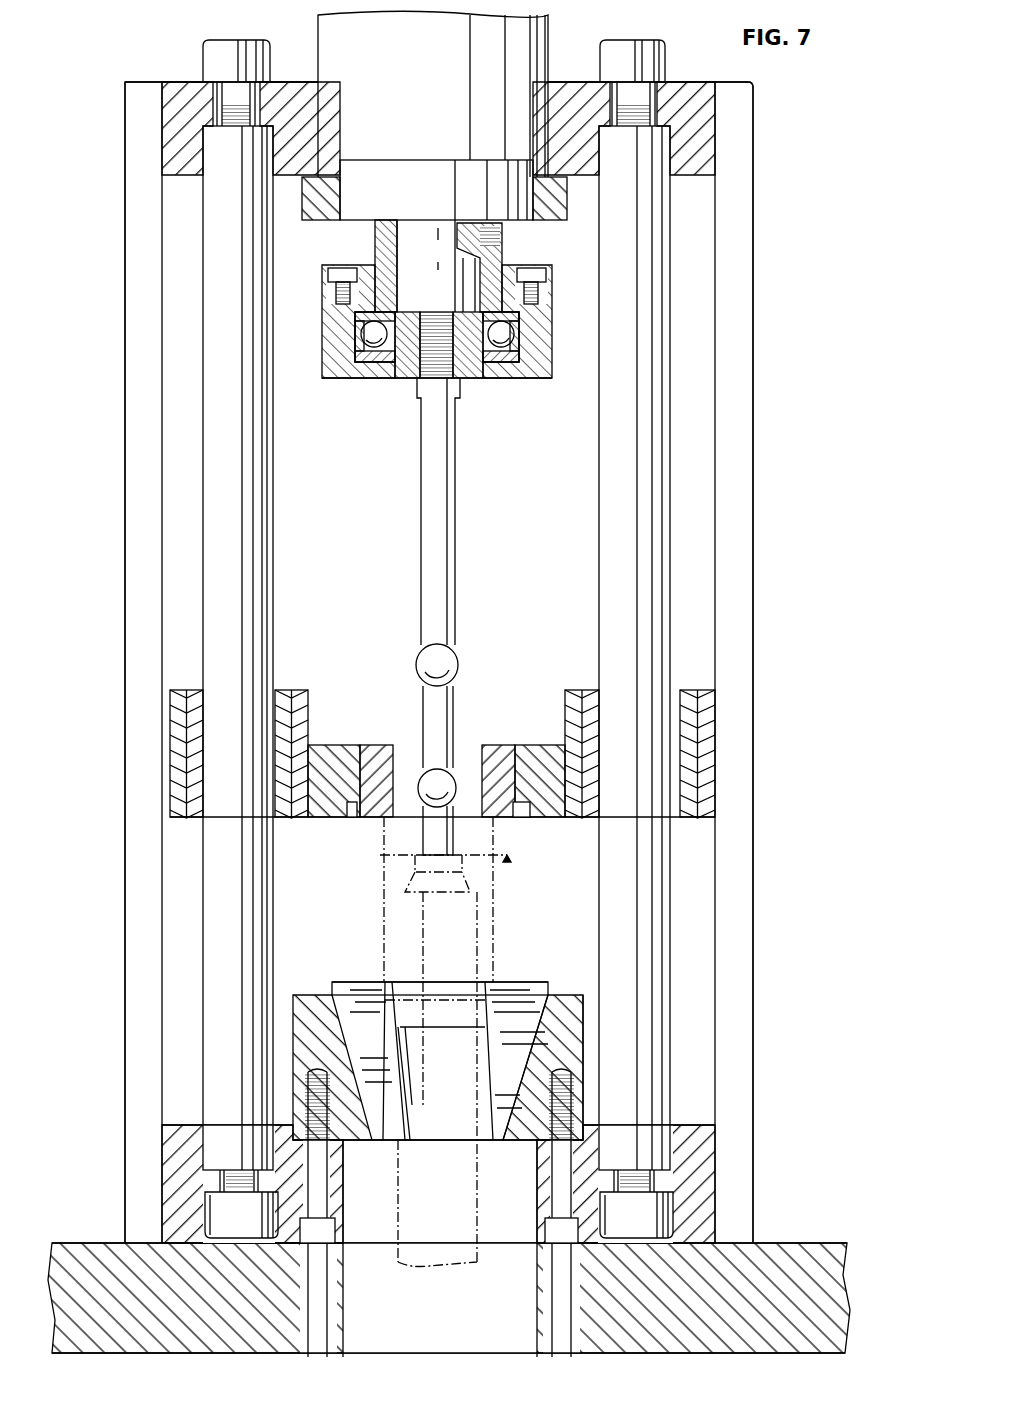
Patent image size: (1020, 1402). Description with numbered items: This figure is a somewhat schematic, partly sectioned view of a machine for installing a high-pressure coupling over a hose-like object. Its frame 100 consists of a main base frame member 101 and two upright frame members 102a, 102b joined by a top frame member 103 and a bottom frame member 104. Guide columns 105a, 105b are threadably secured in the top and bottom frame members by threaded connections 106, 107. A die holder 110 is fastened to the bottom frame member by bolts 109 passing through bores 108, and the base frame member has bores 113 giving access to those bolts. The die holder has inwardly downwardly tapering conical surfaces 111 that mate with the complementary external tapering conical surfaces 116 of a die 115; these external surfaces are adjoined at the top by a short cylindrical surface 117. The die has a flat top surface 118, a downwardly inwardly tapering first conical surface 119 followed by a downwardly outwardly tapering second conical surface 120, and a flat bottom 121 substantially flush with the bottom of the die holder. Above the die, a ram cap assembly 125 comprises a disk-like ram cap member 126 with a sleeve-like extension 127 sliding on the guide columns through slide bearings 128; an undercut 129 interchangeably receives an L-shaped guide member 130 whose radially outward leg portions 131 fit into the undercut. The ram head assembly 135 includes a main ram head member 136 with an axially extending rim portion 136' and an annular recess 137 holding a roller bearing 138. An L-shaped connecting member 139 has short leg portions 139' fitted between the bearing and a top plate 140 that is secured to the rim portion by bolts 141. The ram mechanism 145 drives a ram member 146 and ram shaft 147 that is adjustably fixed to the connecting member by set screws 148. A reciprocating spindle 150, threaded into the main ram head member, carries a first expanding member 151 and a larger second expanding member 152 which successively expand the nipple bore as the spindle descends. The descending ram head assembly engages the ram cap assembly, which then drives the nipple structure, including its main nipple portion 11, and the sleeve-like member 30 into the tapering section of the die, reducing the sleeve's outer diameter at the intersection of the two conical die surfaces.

The frame 100 is at (800, 1200).
The main base frame member 101 is at (790, 1265).
The upright frame member 102a is at (132, 456).
The upright frame member 102b is at (737, 479).
The top frame member 103 is at (695, 100).
The bottom frame member 104 is at (700, 1170).
The guide column 105a is at (258, 507).
The guide column 105b is at (600, 507).
The threaded connection 106 is at (212, 1178).
The threaded connection 107 is at (228, 98).
The bore 108 is at (552, 1200).
The bolt 109 is at (343, 1187).
The die holder 110 is at (306, 1010).
The inwardly downwardly tapering conical surface 111 is at (346, 1000).
The bore 113 is at (330, 1300).
The die 115 is at (376, 968).
The external tapering conical surface 116 is at (585, 1032).
The short cylindrical surface 117 is at (552, 1000).
The flat top surface 118 is at (516, 1006).
The first conical surface 119 is at (485, 1010).
The second conical surface 120 is at (488, 1088).
The flat bottom 121 is at (500, 1142).
The ram cap assembly 125 is at (330, 725).
The ram cap member 126 is at (541, 756).
The sleeve-like extension 127 is at (578, 697).
The slide bearing 128 is at (287, 697).
The undercut 129 is at (355, 819).
The guide member 130 is at (497, 756).
The leg portion 131 is at (523, 819).
The ram head assembly 135 is at (335, 393).
The main ram head member 136 is at (417, 366).
The rim portion 136' is at (544, 335).
The annular recess 137 is at (525, 382).
The roller bearing 138 is at (522, 342).
The connecting member 139 is at (357, 266).
The leg portion 139' is at (336, 336).
The top plate 140 is at (540, 292).
The bolt 141 is at (338, 294).
The ram mechanism 145 is at (560, 50).
The ram member 146 is at (395, 172).
The ram shaft 147 is at (425, 238).
The set screw 148 is at (496, 228).
The reciprocating spindle 150 is at (452, 582).
The first expanding member 151 is at (426, 794).
The second expanding member 152 is at (456, 660).
The sleeve-like member 30 is at (495, 915).
The main nipple portion 11 is at (498, 868).